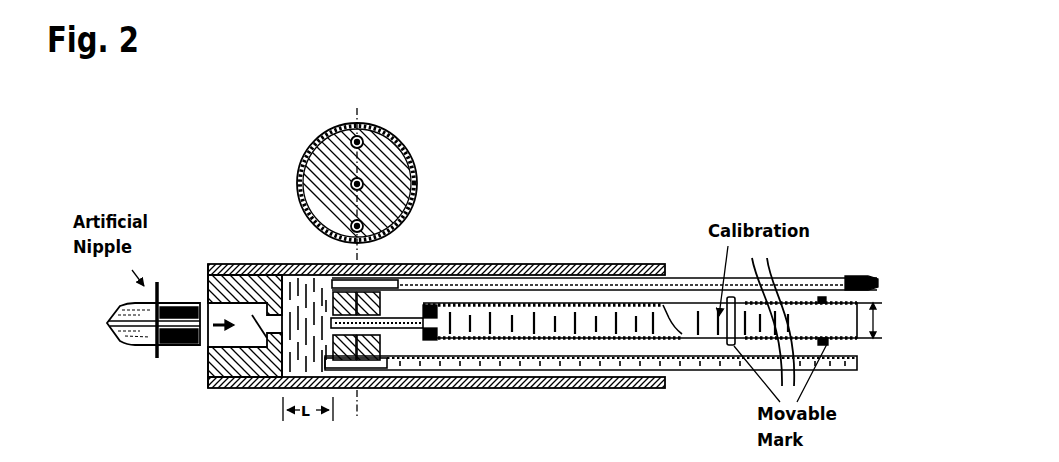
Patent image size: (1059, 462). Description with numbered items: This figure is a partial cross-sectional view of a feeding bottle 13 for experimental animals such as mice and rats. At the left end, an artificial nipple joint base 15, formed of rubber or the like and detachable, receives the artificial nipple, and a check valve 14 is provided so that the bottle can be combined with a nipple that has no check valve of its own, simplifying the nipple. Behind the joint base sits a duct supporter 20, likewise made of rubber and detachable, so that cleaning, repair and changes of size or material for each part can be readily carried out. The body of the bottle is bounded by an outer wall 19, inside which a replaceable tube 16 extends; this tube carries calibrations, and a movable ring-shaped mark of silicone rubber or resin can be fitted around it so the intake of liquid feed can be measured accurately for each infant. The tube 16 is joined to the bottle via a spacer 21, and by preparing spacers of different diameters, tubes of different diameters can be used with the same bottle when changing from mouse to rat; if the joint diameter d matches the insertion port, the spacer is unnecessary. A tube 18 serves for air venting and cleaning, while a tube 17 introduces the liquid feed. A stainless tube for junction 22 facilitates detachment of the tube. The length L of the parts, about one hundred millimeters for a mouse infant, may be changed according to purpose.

The feeding bottle 13 is at (877, 171).
The check valve 14 is at (263, 328).
The artificial nipple joint base 15 is at (223, 290).
The tube 16 is at (561, 305).
The tube 17 is at (695, 376).
The tube 18 is at (688, 275).
The outer wall 19 is at (538, 389).
The duct supporter 20 is at (330, 297).
The spacer 21 is at (419, 338).
The tube for junction 22 is at (362, 221).